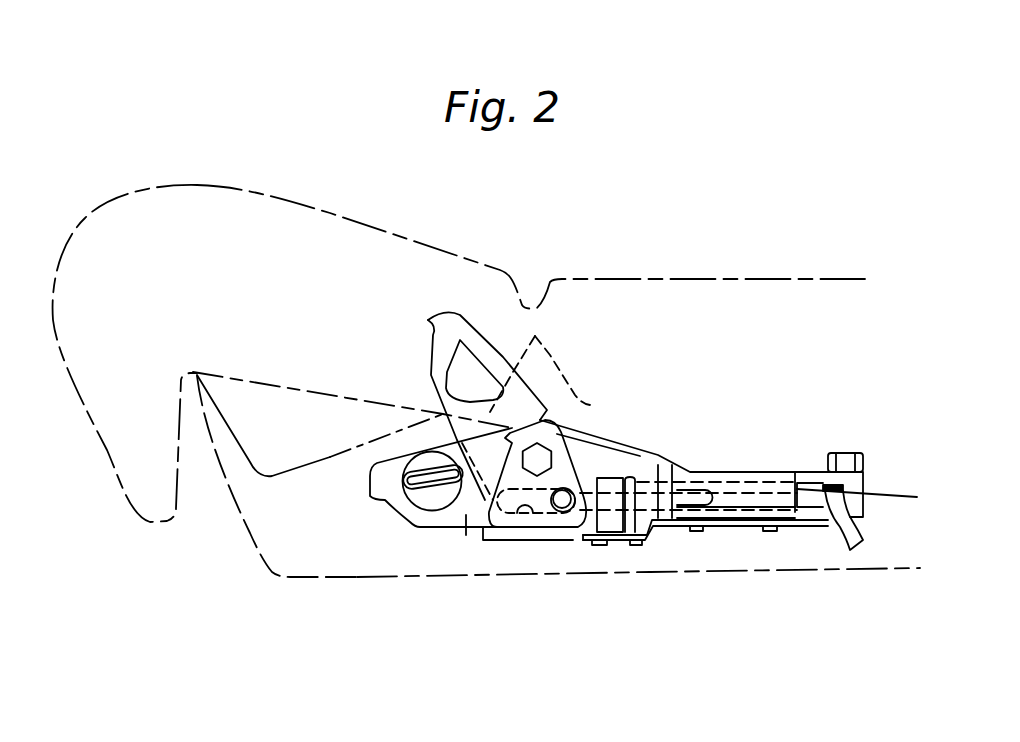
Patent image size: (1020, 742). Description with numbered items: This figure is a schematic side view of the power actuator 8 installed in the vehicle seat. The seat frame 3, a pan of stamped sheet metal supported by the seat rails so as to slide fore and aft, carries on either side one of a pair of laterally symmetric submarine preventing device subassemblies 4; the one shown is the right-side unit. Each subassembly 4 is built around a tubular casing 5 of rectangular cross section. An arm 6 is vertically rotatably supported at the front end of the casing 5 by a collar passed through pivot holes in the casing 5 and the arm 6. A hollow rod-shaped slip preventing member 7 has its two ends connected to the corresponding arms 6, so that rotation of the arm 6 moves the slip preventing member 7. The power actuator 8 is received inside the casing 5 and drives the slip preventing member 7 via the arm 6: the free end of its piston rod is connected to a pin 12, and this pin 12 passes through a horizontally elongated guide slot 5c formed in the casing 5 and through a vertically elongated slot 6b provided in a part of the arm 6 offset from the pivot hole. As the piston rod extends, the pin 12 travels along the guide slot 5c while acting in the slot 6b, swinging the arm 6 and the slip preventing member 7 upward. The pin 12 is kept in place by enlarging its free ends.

The seat frame 3 is at (337, 578).
The submarine preventing device subassembly 4 is at (633, 560).
The casing 5 is at (770, 466).
The guide slot 5c is at (534, 513).
The arm 6 is at (466, 523).
The slot 6b is at (582, 482).
The slip preventing member 7 is at (422, 490).
The power actuator 8 is at (725, 470).
The pin 12 is at (567, 513).